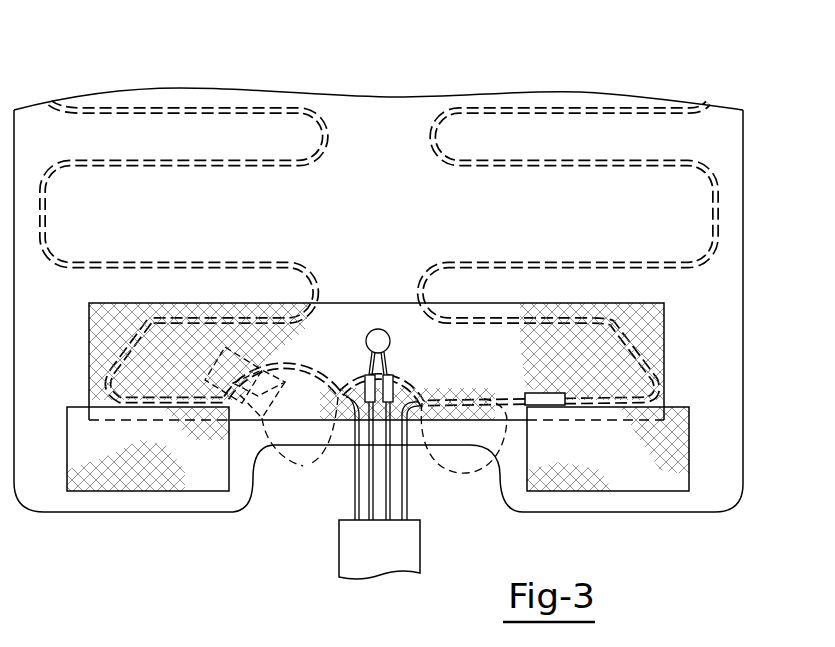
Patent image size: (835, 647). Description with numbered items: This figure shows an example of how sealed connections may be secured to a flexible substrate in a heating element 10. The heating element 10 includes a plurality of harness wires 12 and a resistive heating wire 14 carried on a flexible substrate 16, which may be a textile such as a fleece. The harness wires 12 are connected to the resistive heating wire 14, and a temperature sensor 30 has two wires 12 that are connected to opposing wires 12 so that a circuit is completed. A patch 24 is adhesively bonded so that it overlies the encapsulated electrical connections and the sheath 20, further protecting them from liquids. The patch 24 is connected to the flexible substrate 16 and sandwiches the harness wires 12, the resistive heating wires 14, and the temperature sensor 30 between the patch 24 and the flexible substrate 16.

The heating element 10 is at (760, 357).
The harness wires 12 is at (326, 372).
The resistive heating wire 14 is at (152, 108).
The flexible substrate 16 is at (368, 130).
The sheath 20 is at (384, 445).
The patch 24 is at (77, 433).
The temperature sensor 30 is at (385, 315).